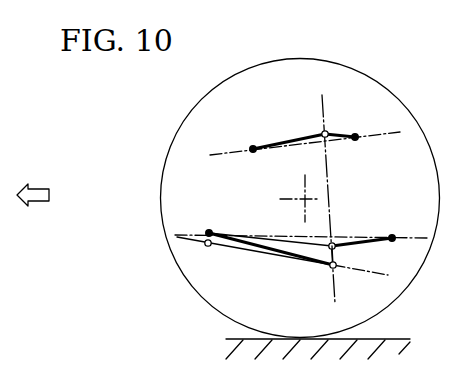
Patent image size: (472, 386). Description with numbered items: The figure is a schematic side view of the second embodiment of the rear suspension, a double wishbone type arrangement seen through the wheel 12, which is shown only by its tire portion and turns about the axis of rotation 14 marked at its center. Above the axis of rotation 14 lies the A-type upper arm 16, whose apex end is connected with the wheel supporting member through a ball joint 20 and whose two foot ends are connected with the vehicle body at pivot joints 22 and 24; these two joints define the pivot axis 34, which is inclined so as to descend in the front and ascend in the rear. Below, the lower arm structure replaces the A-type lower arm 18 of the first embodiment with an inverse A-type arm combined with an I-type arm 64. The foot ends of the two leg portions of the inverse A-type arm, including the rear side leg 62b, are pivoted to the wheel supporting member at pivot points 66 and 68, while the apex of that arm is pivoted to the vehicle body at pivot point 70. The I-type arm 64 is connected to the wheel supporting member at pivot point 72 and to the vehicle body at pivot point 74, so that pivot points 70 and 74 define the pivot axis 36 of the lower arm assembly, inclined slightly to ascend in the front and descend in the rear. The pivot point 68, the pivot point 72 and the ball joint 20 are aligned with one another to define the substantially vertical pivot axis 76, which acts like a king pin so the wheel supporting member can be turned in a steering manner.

The wheel 12 is at (162, 189).
The axis of rotation 14 is at (303, 196).
The A-type upper arm 16 is at (275, 144).
The A-type lower arm 18 is at (353, 235).
The ball joint 20 is at (323, 131).
The pivot joint 22 is at (251, 147).
The pivot joint 24 is at (356, 135).
The pivot axis 34 is at (376, 141).
The pivot axis 36 is at (263, 233).
The rear side leg portion 62b is at (257, 251).
The I-type arm 64 is at (371, 243).
The pivot point 66 is at (208, 247).
The pivot point 68 is at (330, 268).
The pivot point 70 is at (209, 230).
The pivot point 72 is at (337, 268).
The pivot point 74 is at (393, 236).
The pivot axis 76 is at (328, 108).